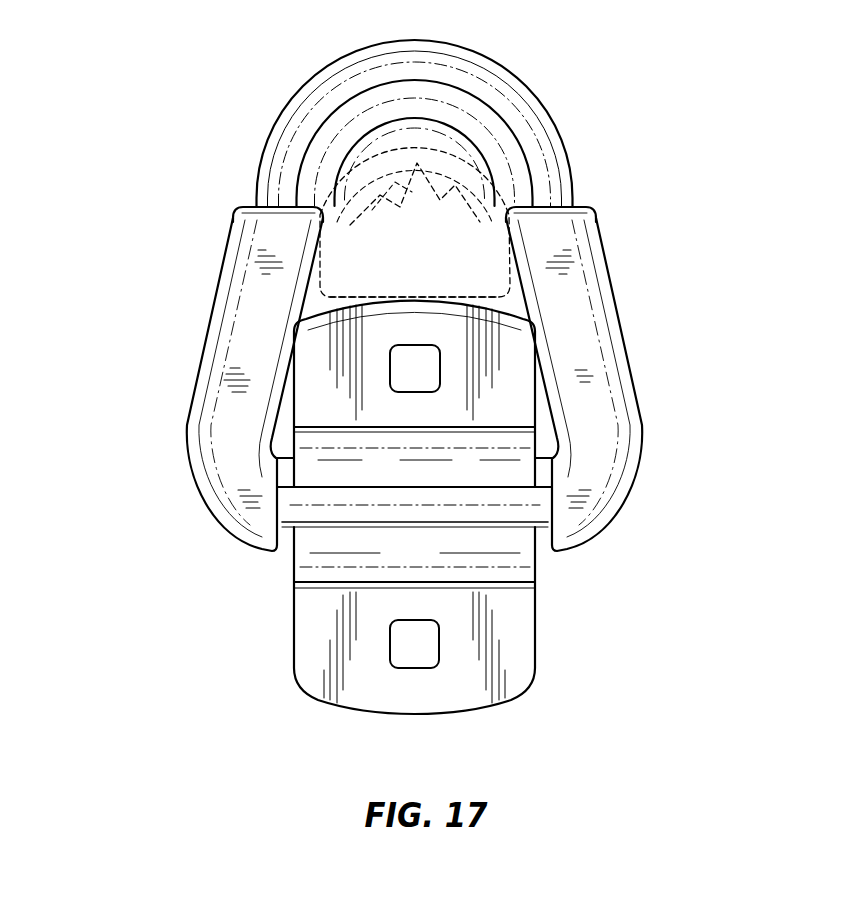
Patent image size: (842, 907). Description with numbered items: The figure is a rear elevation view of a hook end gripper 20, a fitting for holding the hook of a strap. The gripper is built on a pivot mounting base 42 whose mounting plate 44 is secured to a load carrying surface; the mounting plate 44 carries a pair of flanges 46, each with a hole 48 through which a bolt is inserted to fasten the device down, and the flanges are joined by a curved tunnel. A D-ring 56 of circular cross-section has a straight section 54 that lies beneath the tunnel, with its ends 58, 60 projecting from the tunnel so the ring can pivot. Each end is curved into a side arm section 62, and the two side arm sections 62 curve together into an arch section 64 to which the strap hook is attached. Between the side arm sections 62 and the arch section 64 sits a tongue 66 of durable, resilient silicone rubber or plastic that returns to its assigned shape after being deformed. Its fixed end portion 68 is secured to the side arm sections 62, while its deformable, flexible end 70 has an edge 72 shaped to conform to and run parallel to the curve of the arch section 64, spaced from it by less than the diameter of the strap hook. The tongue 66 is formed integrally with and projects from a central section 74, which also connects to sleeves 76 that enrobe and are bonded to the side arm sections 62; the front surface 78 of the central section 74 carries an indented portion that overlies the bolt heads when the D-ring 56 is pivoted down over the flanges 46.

The hook end gripper 20 is at (160, 130).
The pivot mounting base 42 is at (266, 603).
The mounting plate 44 is at (288, 709).
The flanges 46 is at (508, 335).
The hole 48 is at (424, 371).
The straight section 54 is at (413, 510).
The D-ring 56 is at (288, 88).
The end 58 is at (547, 545).
The end 60 is at (281, 548).
The side arm section 62 is at (255, 195).
The arch section 64 is at (477, 70).
The tongue 66 is at (430, 212).
The fixed end portion 68 is at (340, 242).
The deformable, flexible end 70 is at (393, 148).
The edge 72 is at (393, 122).
The central section 74 is at (326, 292).
The sleeves 76 is at (222, 367).
The front surface 78 is at (292, 397).